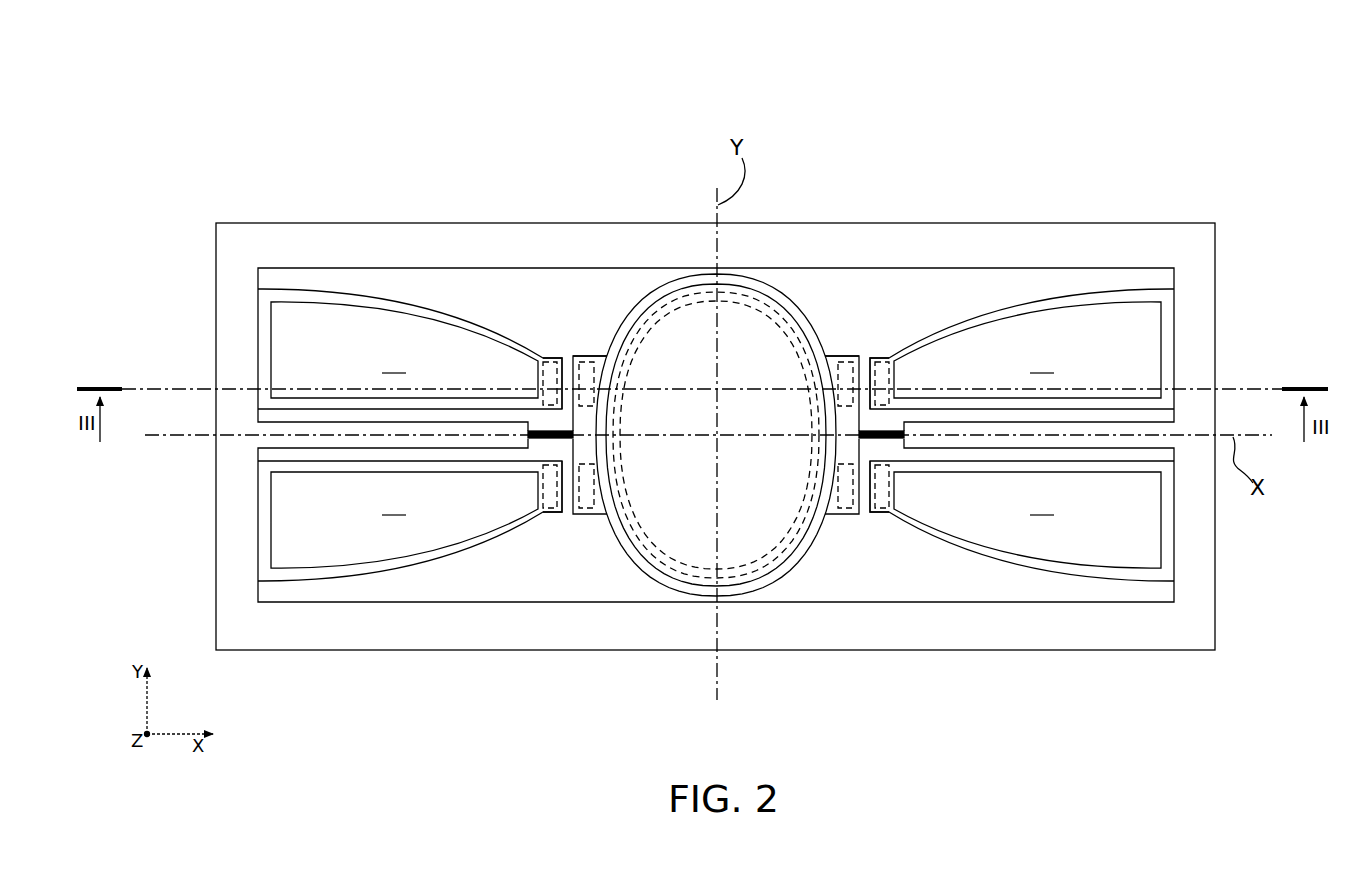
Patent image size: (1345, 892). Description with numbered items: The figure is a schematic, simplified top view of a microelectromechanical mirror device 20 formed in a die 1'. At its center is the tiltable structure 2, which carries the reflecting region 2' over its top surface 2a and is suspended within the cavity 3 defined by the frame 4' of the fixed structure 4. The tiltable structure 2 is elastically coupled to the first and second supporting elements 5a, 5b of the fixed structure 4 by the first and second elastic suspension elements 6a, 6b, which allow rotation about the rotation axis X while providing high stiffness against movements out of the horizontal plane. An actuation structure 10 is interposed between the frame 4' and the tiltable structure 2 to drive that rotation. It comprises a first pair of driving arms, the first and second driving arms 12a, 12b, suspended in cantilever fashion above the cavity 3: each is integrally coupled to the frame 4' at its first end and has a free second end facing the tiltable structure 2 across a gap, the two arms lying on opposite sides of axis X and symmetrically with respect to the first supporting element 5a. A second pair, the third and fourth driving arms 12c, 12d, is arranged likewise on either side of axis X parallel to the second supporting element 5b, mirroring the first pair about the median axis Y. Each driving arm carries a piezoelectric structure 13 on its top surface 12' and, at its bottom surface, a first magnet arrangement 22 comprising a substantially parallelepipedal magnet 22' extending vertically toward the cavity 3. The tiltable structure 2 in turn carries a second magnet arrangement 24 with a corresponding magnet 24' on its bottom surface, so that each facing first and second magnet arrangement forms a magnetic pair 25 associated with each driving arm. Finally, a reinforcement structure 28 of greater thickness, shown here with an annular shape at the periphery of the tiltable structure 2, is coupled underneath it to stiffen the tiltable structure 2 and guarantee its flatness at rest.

The die 1' is at (158, 247).
The tiltable structure 2 is at (716, 436).
The reflecting region 2' is at (716, 435).
The top surface 2a is at (769, 285).
The cavity 3 is at (440, 598).
The fixed structure 4 is at (731, 397).
The frame 4' is at (1245, 209).
The first supporting element 5a is at (462, 437).
The second supporting element 5b is at (965, 438).
The first elastic suspension element 6a is at (538, 439).
The second elastic suspension element 6b is at (895, 439).
The actuation structure 10 is at (331, 290).
The top surface 12' is at (716, 422).
The first driving arm 12a is at (449, 313).
The second driving arm 12b is at (388, 570).
The third driving arm 12c is at (1000, 310).
The fourth driving arm 12d is at (1052, 568).
The piezoelectric structure 13 is at (716, 435).
The microelectromechanical mirror device 20 is at (1266, 166).
The first magnet arrangement 22 is at (698, 344).
The magnet 22' is at (719, 428).
The second magnet arrangement 24 is at (716, 337).
The magnet 24' is at (708, 439).
The magnetic pair 25 is at (589, 353).
The reinforcement structure 28 is at (677, 568).